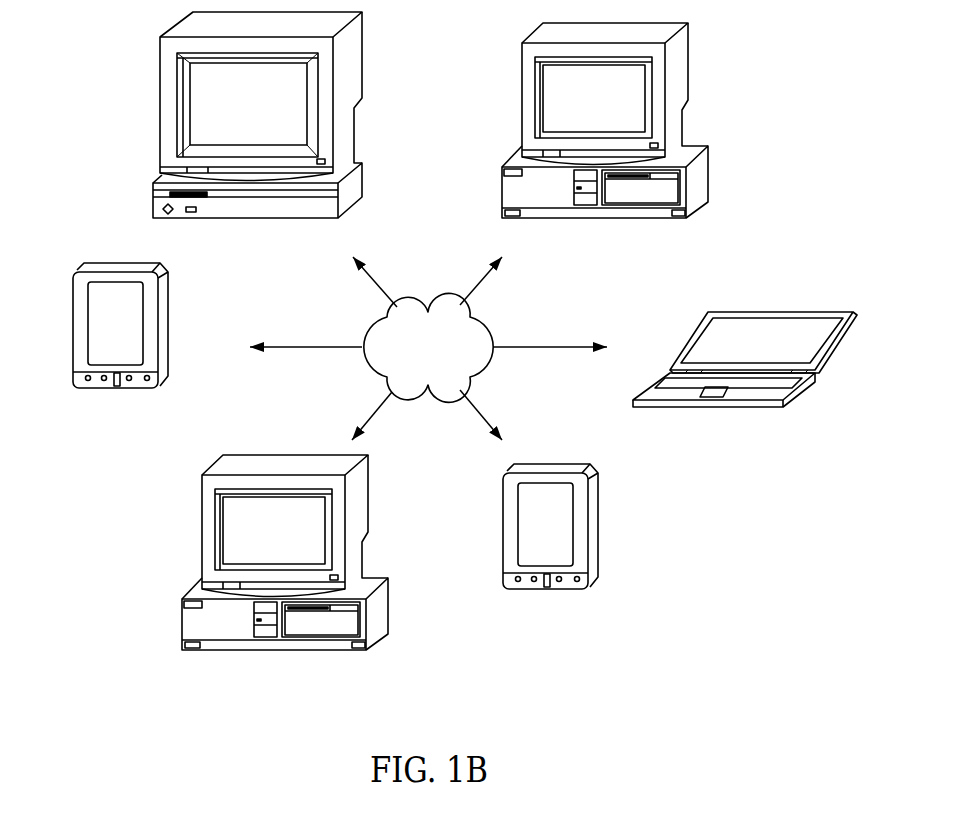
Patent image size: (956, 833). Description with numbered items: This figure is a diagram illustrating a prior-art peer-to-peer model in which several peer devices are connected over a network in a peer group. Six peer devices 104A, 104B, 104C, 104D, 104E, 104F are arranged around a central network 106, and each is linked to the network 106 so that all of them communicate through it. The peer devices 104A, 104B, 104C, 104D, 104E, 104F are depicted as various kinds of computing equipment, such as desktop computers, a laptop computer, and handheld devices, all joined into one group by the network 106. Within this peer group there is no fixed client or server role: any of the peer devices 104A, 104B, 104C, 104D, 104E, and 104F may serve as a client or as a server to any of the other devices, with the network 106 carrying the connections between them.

The peer device 104A is at (275, 274).
The peer device 104B is at (622, 273).
The peer device 104C is at (733, 465).
The peer device 104D is at (573, 650).
The peer device 104E is at (302, 717).
The peer device 104F is at (143, 447).
The network 106 is at (445, 376).